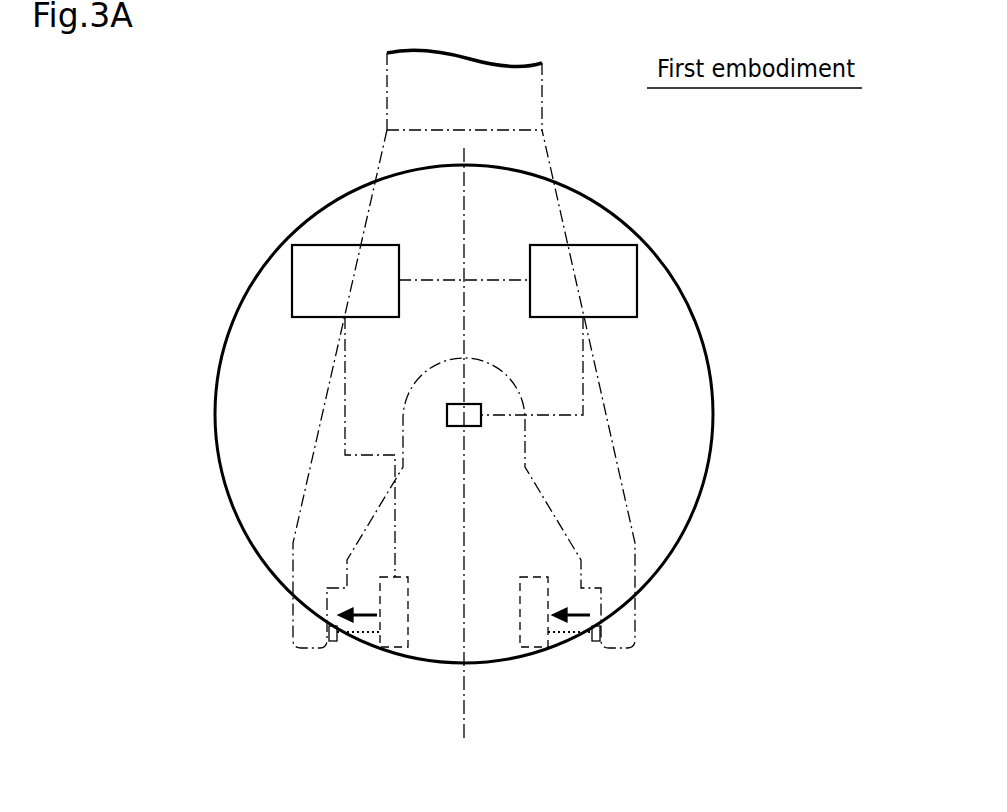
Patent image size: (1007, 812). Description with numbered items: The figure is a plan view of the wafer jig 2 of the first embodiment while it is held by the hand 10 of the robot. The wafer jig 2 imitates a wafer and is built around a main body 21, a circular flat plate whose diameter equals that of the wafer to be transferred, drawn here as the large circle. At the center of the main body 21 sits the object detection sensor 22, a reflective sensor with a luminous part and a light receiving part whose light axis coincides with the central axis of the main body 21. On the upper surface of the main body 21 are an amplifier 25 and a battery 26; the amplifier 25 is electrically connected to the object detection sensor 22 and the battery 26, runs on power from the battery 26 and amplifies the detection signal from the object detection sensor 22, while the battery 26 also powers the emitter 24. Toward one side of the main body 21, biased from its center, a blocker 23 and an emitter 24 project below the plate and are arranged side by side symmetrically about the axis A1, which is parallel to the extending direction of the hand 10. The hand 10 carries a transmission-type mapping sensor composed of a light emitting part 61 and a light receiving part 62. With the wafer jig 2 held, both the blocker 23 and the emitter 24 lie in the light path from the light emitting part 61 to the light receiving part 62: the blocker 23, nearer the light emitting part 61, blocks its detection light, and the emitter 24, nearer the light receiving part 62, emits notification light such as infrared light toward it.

The wafer jig 2 is at (664, 603).
The hand 10 is at (292, 555).
The main body 21 is at (670, 490).
The object detection sensor 22 is at (447, 415).
The blocker 23 is at (535, 654).
The emitter 24 is at (393, 656).
The amplifier 25 is at (630, 281).
The battery 26 is at (292, 282).
The light emitting part 61 is at (596, 642).
The light receiving part 62 is at (332, 642).
The axis A1 is at (464, 728).